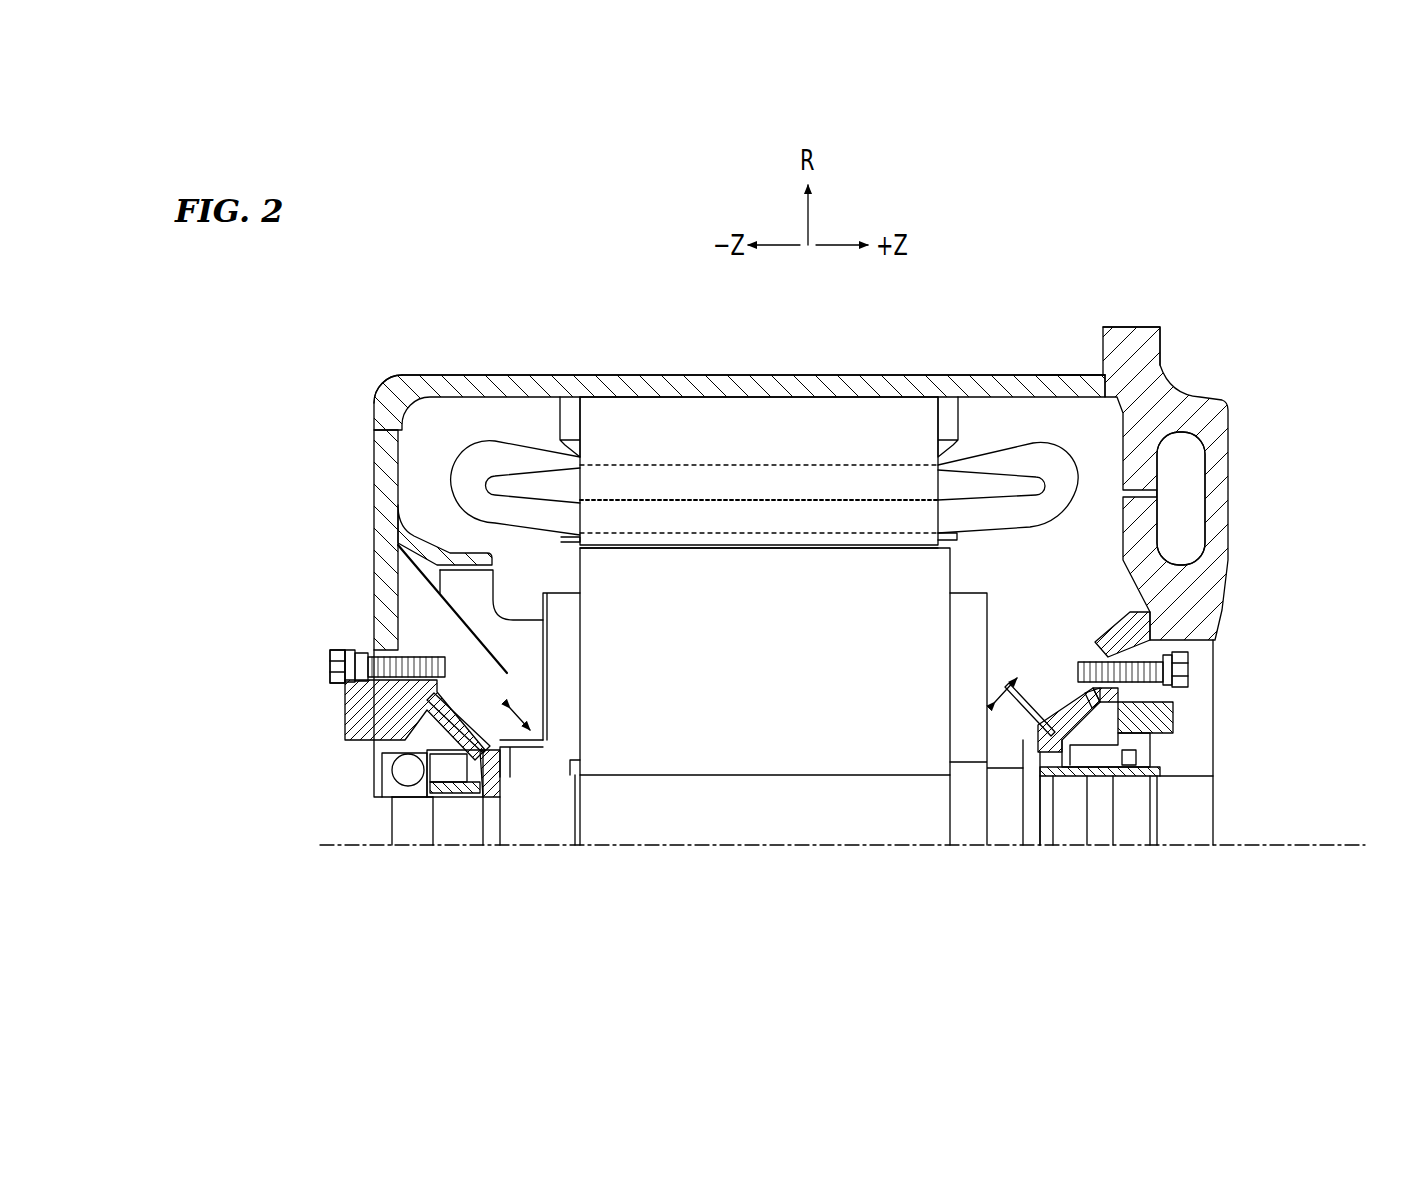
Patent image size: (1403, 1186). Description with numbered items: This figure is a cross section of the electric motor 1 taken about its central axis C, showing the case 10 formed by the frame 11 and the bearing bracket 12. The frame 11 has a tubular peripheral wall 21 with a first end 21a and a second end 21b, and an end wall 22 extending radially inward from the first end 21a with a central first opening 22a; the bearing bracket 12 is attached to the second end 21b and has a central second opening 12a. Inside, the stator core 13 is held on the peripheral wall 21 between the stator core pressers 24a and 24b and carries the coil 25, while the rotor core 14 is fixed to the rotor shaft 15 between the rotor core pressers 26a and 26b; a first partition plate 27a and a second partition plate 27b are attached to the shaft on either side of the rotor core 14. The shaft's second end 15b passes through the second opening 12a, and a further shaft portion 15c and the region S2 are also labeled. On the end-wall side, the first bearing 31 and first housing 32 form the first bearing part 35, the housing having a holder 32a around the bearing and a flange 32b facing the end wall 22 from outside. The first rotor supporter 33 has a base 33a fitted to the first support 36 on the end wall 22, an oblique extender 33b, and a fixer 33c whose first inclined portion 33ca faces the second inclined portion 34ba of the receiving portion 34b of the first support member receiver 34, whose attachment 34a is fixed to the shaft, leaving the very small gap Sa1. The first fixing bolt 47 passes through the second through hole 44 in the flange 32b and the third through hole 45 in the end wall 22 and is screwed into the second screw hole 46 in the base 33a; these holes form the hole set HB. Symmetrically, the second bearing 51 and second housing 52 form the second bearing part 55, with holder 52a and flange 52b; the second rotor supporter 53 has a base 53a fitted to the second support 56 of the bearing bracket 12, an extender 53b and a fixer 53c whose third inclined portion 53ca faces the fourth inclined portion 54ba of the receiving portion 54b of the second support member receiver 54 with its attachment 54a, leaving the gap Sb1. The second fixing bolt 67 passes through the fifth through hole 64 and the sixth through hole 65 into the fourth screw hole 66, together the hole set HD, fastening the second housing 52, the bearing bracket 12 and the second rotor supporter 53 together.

The electric motor 1 is at (1180, 262).
The case 10 is at (1165, 328).
The frame 11 is at (516, 372).
The bearing bracket 12 is at (1218, 398).
The second opening 12a is at (1213, 770).
The stator core 13 is at (765, 414).
The rotor core 14 is at (832, 578).
The rotor shaft 15 is at (766, 828).
The second end 15b is at (1133, 845).
The shaft portion 15c is at (410, 847).
The peripheral wall 21 is at (664, 378).
The first end 21a is at (437, 380).
The second end 21b is at (1085, 372).
The end wall 22 is at (380, 445).
The first opening 22a is at (380, 770).
The stator core presser 24a is at (578, 410).
The stator core presser 24b is at (950, 410).
The coil 25 is at (703, 465).
The rotor core presser 26a is at (582, 847).
The rotor core presser 26b is at (960, 847).
The first partition plate 27a is at (452, 578).
The second partition plate 27b is at (1152, 510).
The first bearing 31 is at (375, 847).
The first housing 32 is at (240, 710).
The holder 32a is at (392, 756).
The flange 32b is at (393, 700).
The first rotor supporter 33 is at (645, 565).
The base 33a is at (430, 650).
The extender 33b is at (450, 705).
The fixer 33c is at (485, 745).
The first inclined portion 33ca is at (500, 762).
The first support member receiver 34 is at (518, 930).
The attachment 34a is at (457, 847).
The receiving portion 34b is at (488, 847).
The second inclined portion 34ba is at (525, 847).
The first bearing part 35 is at (285, 812).
The first support 36 is at (432, 660).
The second through hole 44 is at (333, 665).
The third through hole 45 is at (378, 658).
The second screw hole 46 is at (380, 648).
The first fixing bolt 47 is at (335, 677).
The second bearing 51 is at (1160, 780).
The second housing 52 is at (1282, 708).
The holder 52a is at (1150, 748).
The flange 52b is at (1150, 708).
The second rotor supporter 53 is at (1105, 568).
The base 53a is at (1110, 686).
The extender 53b is at (1094, 692).
The fixer 53c is at (1048, 728).
The third inclined portion 53ca is at (1036, 748).
The second support member receiver 54 is at (1135, 920).
The attachment 54a is at (1090, 778).
The receiving portion 54b is at (1053, 778).
The fourth inclined portion 54ba is at (1040, 778).
The second bearing part 55 is at (1218, 777).
The second support 56 is at (1108, 640).
The fifth through hole 64 is at (1185, 668).
The sixth through hole 65 is at (1150, 660).
The fourth screw hole 66 is at (1130, 615).
The second fixing bolt 67 is at (1165, 675).
The central axis C is at (1330, 843).
The hole set HB is at (248, 550).
The hole set HD is at (1275, 578).
The second space S2 is at (1033, 415).
The gap Sa1 is at (520, 722).
The gap Sb1 is at (1000, 690).